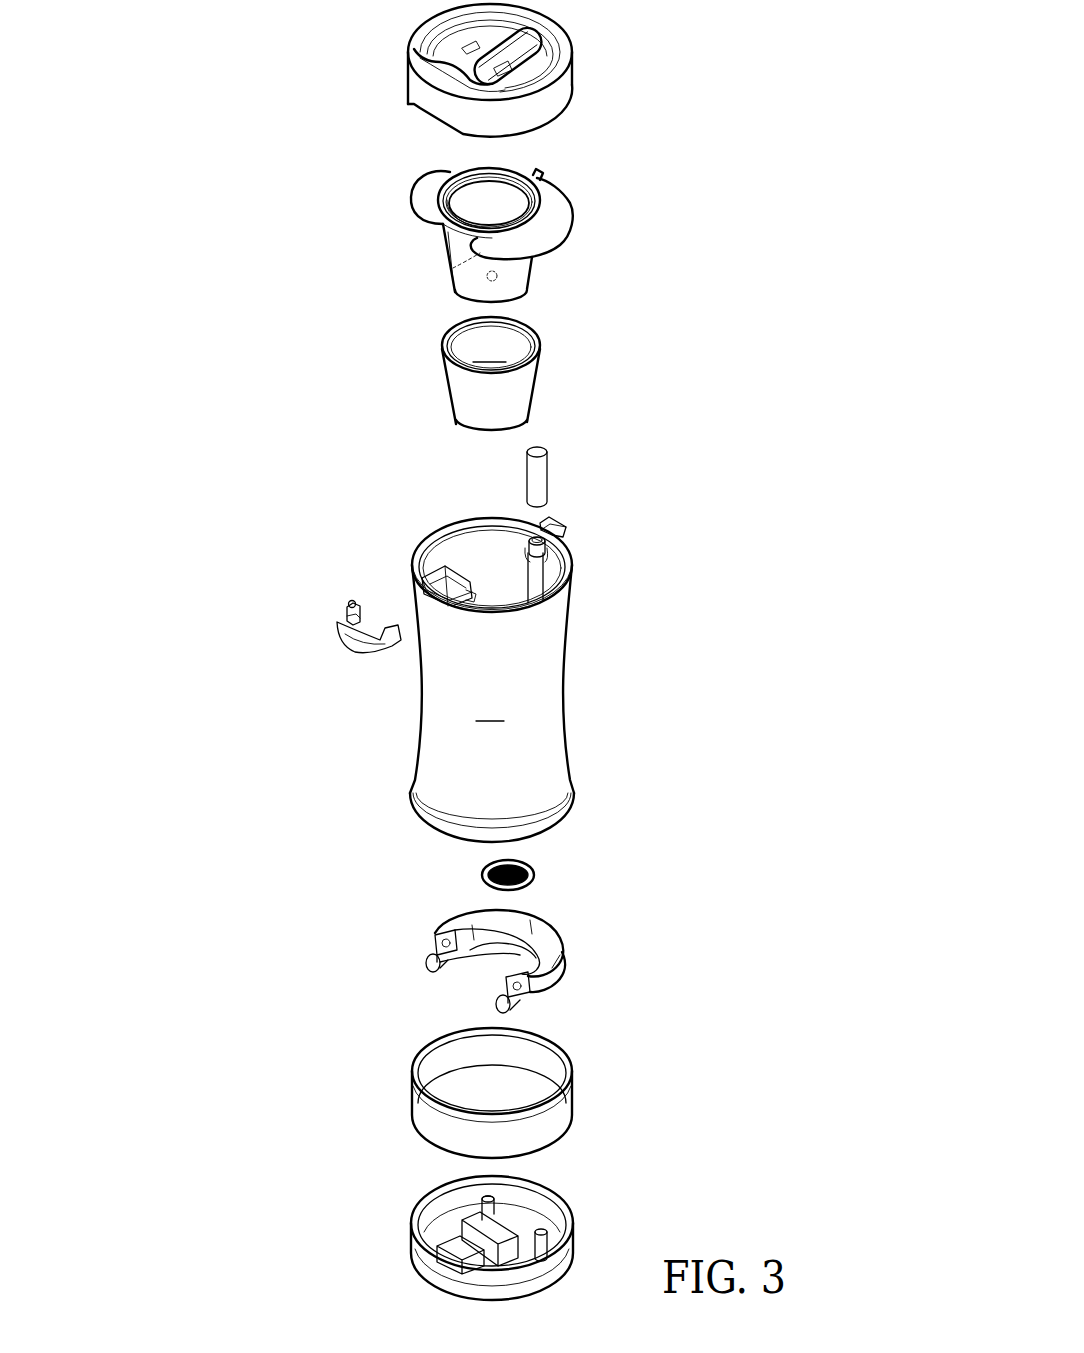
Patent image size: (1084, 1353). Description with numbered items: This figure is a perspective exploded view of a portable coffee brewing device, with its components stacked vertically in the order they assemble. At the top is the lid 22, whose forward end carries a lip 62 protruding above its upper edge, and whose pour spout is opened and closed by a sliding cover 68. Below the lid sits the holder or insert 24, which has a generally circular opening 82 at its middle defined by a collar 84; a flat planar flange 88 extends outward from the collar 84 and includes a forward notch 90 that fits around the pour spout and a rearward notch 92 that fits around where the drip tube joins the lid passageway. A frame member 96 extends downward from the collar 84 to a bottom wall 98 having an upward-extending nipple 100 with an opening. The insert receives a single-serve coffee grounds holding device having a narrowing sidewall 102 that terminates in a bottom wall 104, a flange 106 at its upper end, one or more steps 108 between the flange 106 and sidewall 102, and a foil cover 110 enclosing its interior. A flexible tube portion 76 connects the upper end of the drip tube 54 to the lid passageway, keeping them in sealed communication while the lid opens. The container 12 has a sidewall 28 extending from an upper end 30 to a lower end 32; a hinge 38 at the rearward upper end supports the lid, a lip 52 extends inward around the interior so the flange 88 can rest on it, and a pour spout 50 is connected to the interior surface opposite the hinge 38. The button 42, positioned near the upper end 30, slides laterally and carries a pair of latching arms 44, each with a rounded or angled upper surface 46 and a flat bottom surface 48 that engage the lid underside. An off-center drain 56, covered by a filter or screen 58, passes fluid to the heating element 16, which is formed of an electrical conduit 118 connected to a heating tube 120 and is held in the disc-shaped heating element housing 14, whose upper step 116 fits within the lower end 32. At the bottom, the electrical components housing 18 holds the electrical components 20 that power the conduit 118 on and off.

The container 12 is at (424, 669).
The heating element housing 14 is at (462, 1093).
The heating element 16 is at (433, 961).
The electrical components housing 18 is at (466, 388).
The electrical components 20 is at (536, 1207).
The lid 22 is at (355, 72).
The holder or insert 24 is at (440, 226).
The sidewall 28 is at (492, 679).
The upper end 30 is at (420, 546).
The lower end 32 is at (560, 822).
The hinge 38 is at (565, 522).
The button 42 is at (338, 644).
The latching arms 44 is at (358, 592).
The upper surface 46 is at (346, 603).
The bottom surface 48 is at (340, 612).
The pour spout 50 is at (424, 600).
The lip 52 is at (442, 542).
The drip tube 54 is at (528, 578).
The drain 56 is at (515, 880).
The filter or screen 58 is at (490, 866).
The lip 62 is at (418, 62).
The cover 68 is at (522, 40).
The flexible tube portion 76 is at (551, 480).
The opening 82 is at (508, 200).
The collar 84 is at (452, 178).
The flange 88 is at (470, 170).
The forward notch 90 is at (443, 233).
The rearward notch 92 is at (546, 182).
The frame member 96 is at (446, 268).
The bottom wall 98 is at (466, 298).
The nipple 100 is at (497, 275).
The sidewall 102 is at (522, 398).
The bottom wall 104 is at (492, 436).
The flange 106 is at (534, 322).
The steps 108 is at (512, 372).
The foil cover 110 is at (494, 349).
The step 116 is at (545, 1110).
The electrical conduit 118 is at (433, 940).
The heating tube 120 is at (440, 974).